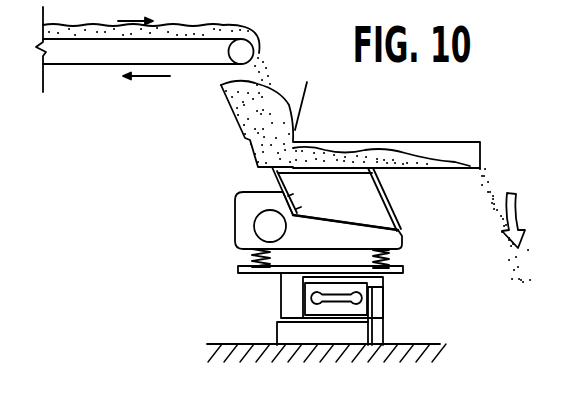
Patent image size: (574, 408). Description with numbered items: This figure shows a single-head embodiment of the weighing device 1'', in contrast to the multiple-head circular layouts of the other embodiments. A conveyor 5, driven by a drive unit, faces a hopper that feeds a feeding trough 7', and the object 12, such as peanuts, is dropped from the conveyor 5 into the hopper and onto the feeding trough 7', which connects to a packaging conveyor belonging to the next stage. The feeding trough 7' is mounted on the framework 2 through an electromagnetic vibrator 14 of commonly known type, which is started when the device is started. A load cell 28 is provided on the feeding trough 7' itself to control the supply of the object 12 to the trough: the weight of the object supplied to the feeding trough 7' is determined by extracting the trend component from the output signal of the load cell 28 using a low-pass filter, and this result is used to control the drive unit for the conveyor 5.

The conveyor 5 is at (98, 58).
The object 12 is at (255, 112).
The feeding trough 7' is at (411, 181).
The electromagnetic vibrator 14 is at (363, 210).
The weighing device 1'' is at (261, 232).
The load cell 28 is at (310, 297).
The framework 2 is at (403, 344).